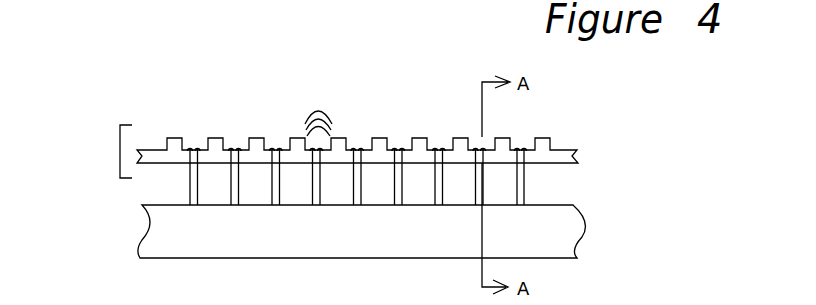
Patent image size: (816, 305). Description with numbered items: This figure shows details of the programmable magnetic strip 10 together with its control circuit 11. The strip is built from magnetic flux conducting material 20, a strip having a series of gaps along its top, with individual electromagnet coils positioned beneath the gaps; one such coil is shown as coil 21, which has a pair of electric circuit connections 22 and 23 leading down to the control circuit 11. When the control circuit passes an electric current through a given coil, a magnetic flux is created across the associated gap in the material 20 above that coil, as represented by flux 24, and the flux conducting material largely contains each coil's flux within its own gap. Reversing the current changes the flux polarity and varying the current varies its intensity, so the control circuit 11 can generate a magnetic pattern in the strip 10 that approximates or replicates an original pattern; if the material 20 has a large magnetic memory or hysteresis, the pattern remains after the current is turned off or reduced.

The magnetic strip 10 is at (108, 151).
The control circuit 11 is at (138, 227).
The magnetic flux conducting material 20 is at (583, 158).
The electromagnet coil 21 is at (190, 145).
The electric circuit connection 22 is at (530, 178).
The electric circuit connection 23 is at (520, 193).
The magnetic flux 24 is at (318, 100).